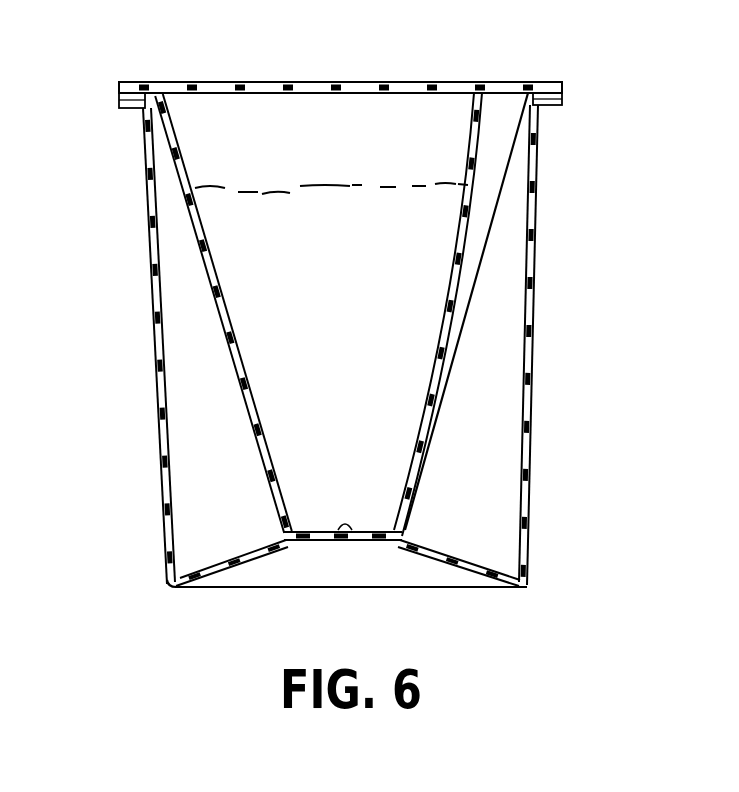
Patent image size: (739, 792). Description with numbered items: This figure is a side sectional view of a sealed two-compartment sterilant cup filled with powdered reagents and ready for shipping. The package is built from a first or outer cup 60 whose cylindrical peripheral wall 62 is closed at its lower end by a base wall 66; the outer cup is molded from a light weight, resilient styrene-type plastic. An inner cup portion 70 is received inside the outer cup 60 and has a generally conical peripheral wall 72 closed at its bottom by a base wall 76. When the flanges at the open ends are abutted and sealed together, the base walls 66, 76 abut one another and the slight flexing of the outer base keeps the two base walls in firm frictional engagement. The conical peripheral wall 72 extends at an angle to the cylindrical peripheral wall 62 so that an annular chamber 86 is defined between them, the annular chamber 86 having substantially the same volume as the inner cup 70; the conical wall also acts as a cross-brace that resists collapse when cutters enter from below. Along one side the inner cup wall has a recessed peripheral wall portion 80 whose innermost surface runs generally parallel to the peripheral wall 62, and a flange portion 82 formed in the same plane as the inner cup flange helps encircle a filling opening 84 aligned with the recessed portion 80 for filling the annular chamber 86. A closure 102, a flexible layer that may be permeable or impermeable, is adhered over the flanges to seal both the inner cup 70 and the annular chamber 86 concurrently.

The outer cup 60 is at (540, 302).
The cylindrical peripheral wall 62 is at (532, 382).
The base wall 66 is at (437, 568).
The inner cup portion 70 is at (173, 108).
The conical peripheral wall 72 is at (176, 177).
The base wall 76 is at (343, 546).
The recessed peripheral wall portion 80 is at (493, 168).
The flange portion 82 is at (482, 92).
The filling opening 84 is at (497, 112).
The annular chamber 86 is at (207, 432).
The closure 102 is at (348, 86).